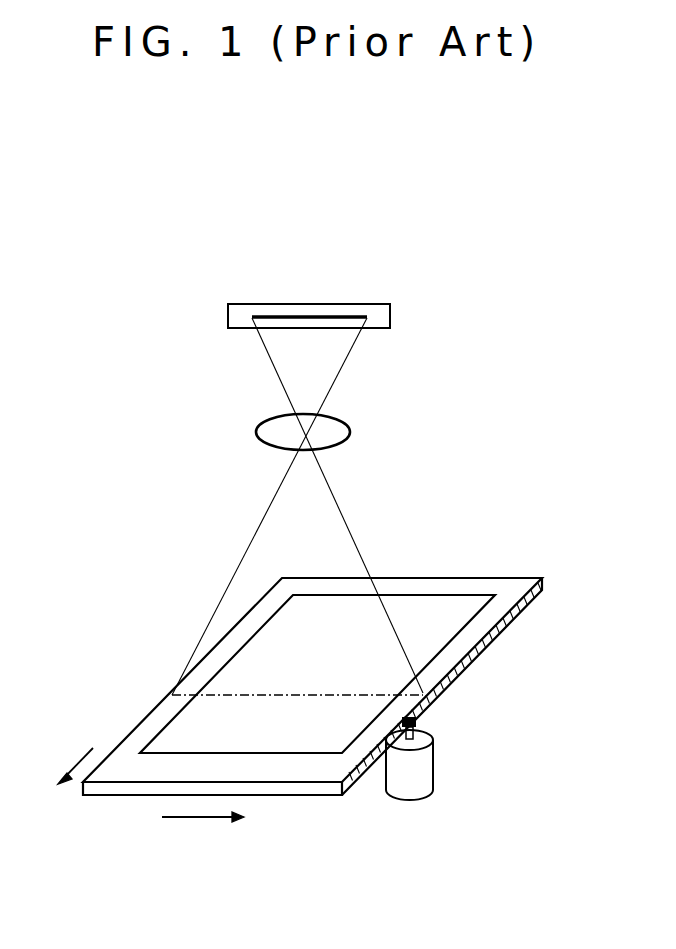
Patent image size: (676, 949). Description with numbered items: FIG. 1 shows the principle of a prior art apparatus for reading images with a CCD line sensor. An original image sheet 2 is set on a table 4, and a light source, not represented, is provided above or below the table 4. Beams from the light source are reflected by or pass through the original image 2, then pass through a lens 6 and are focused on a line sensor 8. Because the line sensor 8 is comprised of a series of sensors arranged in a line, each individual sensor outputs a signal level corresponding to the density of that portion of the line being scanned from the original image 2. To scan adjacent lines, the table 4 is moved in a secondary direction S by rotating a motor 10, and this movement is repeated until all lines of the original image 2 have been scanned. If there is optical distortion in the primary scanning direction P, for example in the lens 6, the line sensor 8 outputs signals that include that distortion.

The original image sheet 2 is at (175, 734).
The table 4 is at (450, 653).
The lens 6 is at (264, 418).
The line sensor 8 is at (293, 290).
The motor 10 is at (433, 765).
The secondary direction S is at (86, 757).
The primary scanning direction P is at (200, 821).